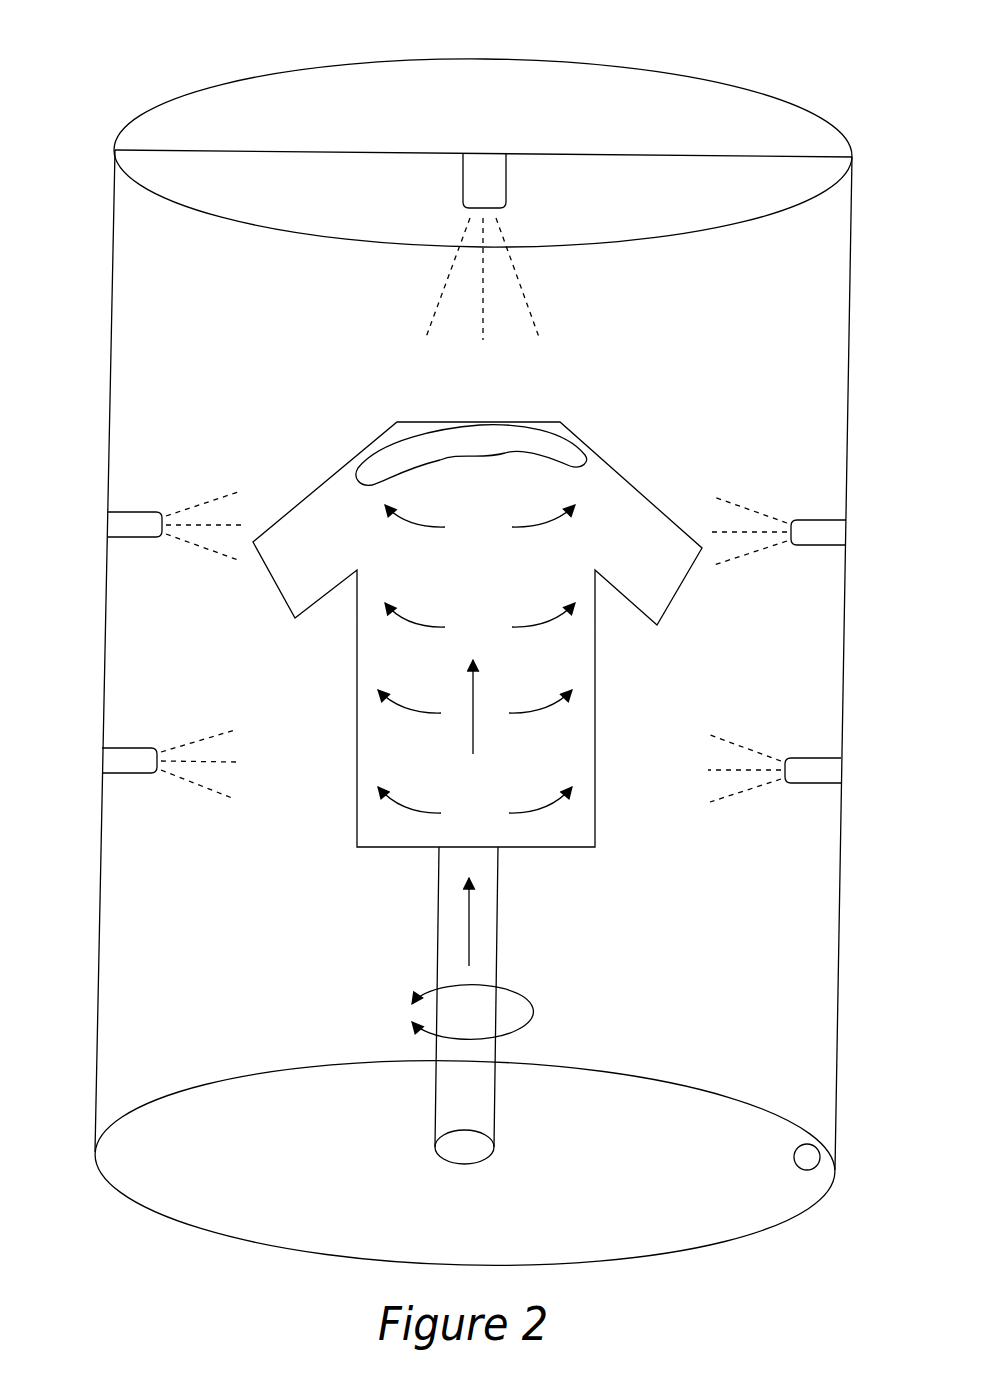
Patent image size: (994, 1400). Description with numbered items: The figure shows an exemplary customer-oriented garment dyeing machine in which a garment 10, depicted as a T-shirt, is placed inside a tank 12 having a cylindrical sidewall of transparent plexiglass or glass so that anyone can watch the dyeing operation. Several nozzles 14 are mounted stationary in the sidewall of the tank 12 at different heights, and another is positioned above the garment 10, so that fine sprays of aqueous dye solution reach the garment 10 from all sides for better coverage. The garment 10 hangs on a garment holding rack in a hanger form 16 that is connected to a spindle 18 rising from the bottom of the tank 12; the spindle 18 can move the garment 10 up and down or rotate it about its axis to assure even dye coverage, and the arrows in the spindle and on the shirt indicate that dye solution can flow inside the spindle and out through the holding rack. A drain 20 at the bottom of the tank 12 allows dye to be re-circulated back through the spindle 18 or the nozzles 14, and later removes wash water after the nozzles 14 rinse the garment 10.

The garment 10 is at (627, 502).
The tank 12 is at (824, 363).
The nozzles 14 is at (490, 172).
The hanger form 16 is at (552, 450).
The spindle 18 is at (484, 927).
The drain 20 is at (812, 1156).